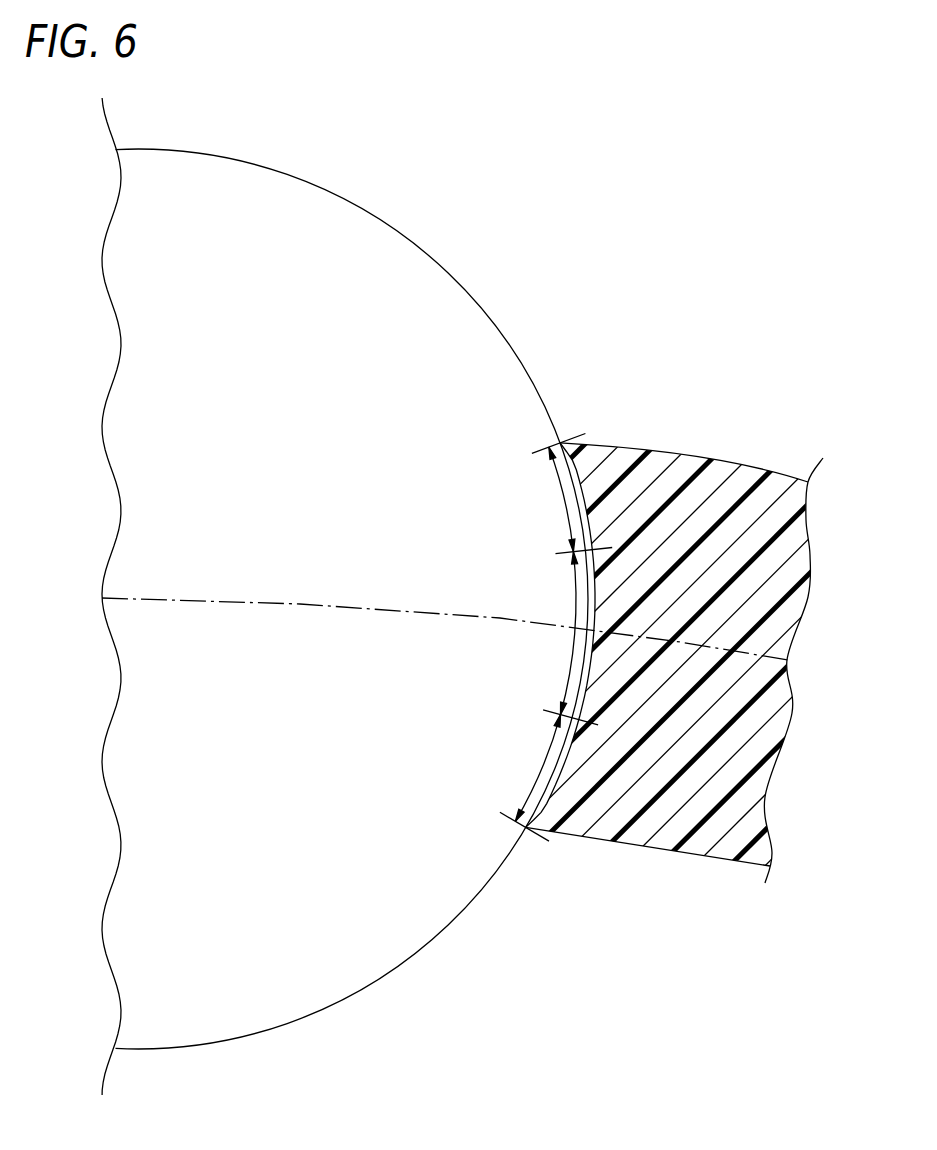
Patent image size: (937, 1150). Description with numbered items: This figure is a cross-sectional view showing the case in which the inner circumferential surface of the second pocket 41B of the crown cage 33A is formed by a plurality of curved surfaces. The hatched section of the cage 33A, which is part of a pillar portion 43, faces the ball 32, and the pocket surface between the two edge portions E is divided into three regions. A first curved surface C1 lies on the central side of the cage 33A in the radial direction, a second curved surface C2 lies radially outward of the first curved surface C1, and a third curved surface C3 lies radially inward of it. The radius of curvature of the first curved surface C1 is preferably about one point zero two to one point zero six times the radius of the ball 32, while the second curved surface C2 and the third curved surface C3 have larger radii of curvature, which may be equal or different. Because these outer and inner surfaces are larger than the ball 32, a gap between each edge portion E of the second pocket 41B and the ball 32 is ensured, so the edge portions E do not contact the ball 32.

The ball 32 is at (407, 282).
The crown cage 33A is at (700, 450).
The second pocket 41B is at (584, 643).
The pillar portion 43 is at (655, 823).
The edge portion E is at (561, 442).
The first curved surface C1 is at (570, 592).
The second curved surface C2 is at (562, 504).
The third curved surface C3 is at (537, 767).